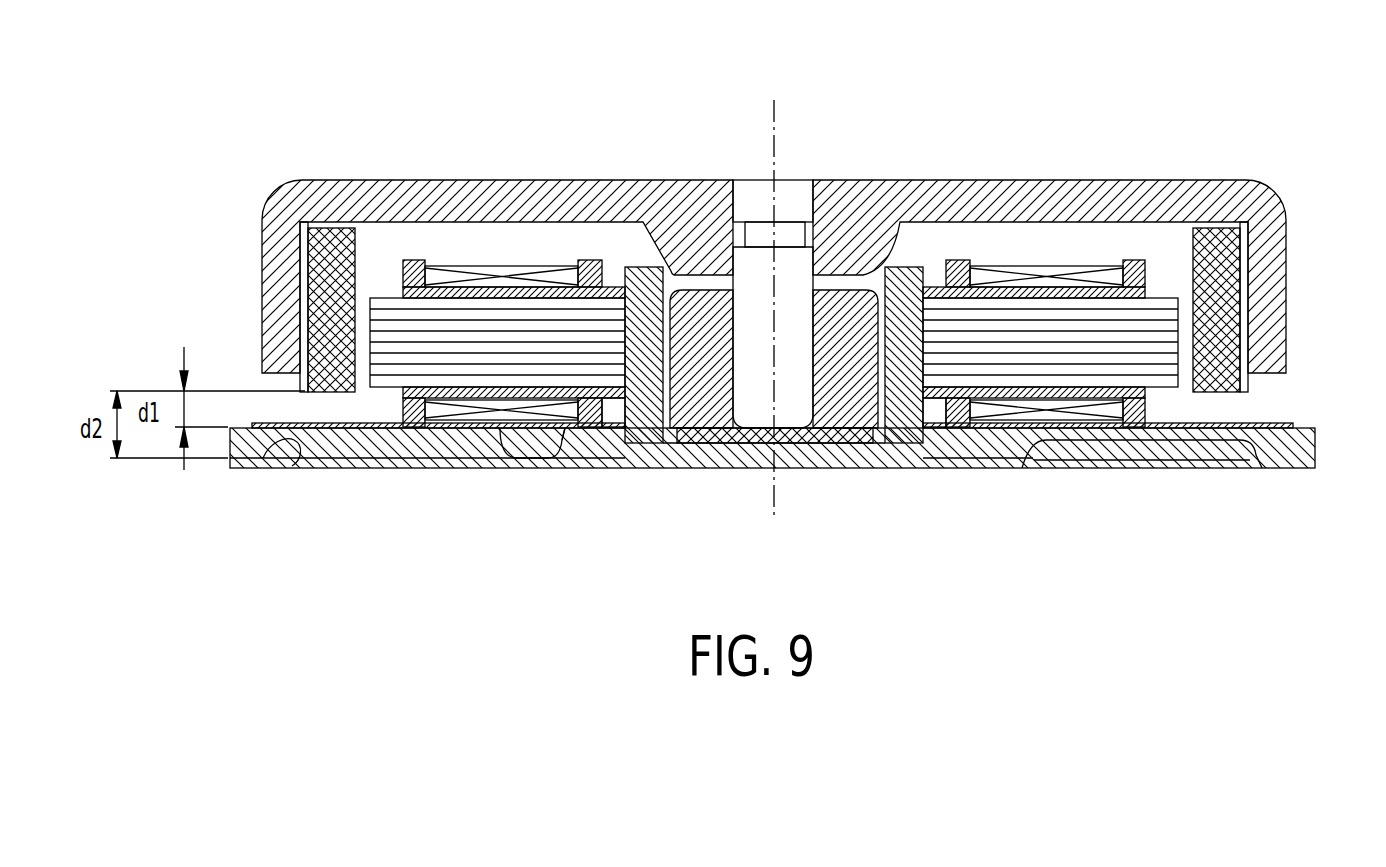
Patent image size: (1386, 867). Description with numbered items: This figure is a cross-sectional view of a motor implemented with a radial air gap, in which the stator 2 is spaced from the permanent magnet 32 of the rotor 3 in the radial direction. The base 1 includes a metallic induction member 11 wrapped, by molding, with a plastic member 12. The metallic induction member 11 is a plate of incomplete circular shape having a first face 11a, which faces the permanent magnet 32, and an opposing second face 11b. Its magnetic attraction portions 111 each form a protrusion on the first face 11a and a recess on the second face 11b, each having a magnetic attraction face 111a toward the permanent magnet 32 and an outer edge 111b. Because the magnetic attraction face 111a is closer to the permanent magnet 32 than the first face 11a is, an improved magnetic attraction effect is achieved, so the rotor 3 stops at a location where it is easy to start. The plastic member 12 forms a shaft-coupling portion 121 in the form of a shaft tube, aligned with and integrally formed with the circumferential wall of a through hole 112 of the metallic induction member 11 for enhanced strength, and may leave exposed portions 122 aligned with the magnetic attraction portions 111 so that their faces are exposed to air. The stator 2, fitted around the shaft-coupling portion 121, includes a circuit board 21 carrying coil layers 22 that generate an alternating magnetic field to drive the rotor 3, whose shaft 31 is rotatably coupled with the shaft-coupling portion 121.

The base 1 is at (751, 325).
The metallic induction member 11 is at (704, 325).
The magnetic attraction portion 111 is at (323, 494).
The magnetic attraction face 111a is at (428, 428).
The outer edge 111b is at (265, 457).
The through hole 112 is at (918, 468).
The first face 11a is at (574, 440).
The second face 11b is at (568, 445).
The plastic member 12 is at (1303, 443).
The shaft-coupling portion 121 is at (645, 283).
The exposed portion 122 is at (428, 428).
The stator 2 is at (772, 325).
The circuit board 21 is at (1197, 424).
The coil layer 22 is at (1023, 277).
The rotor 3 is at (727, 302).
The shaft 31 is at (788, 407).
The permanent magnet 32 is at (322, 278).